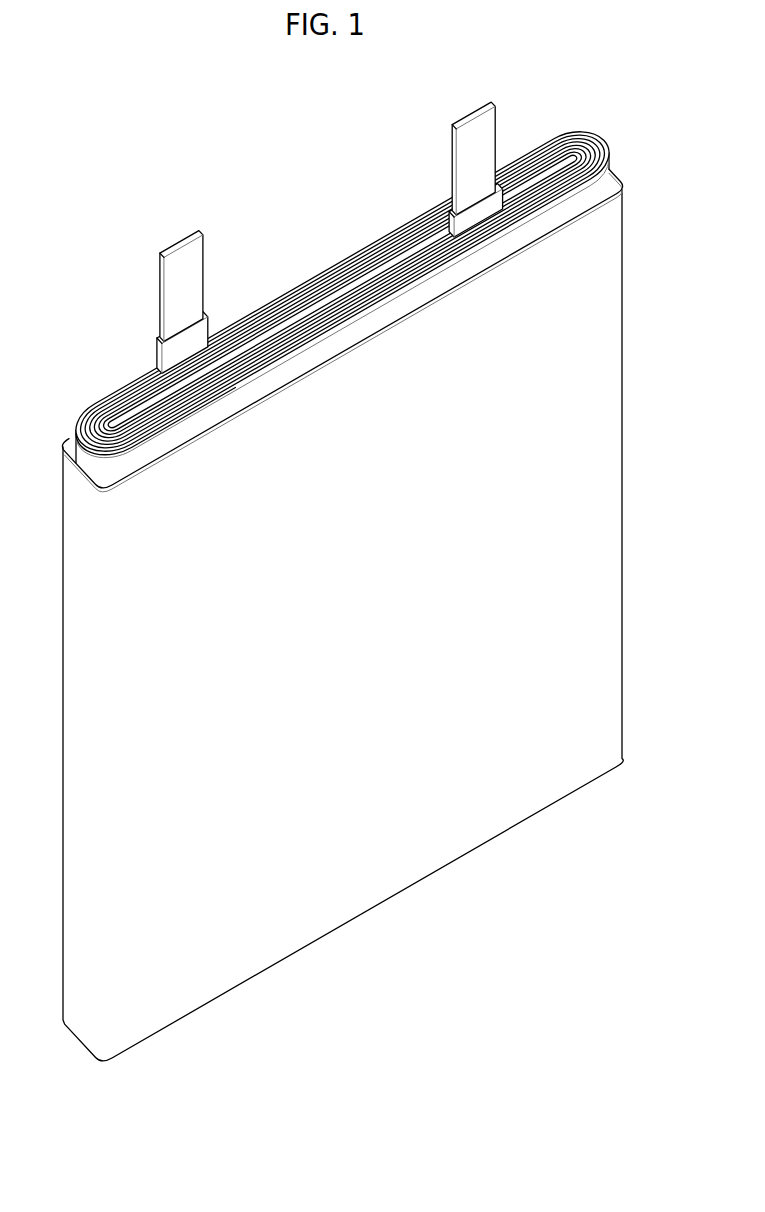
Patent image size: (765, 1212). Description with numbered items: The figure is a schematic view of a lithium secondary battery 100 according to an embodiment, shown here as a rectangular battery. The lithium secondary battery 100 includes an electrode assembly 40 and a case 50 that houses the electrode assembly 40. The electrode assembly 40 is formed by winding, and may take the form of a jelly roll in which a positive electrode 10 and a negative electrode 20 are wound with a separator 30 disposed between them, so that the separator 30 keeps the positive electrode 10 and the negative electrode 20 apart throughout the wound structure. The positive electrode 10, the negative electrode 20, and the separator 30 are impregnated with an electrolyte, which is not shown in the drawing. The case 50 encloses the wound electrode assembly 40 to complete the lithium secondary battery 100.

The lithium secondary battery 100 is at (160, 152).
The positive electrode 10 is at (604, 150).
The negative electrode 20 is at (342, 291).
The separator 30 is at (342, 291).
The electrode assembly 40 is at (391, 219).
The case 50 is at (608, 463).